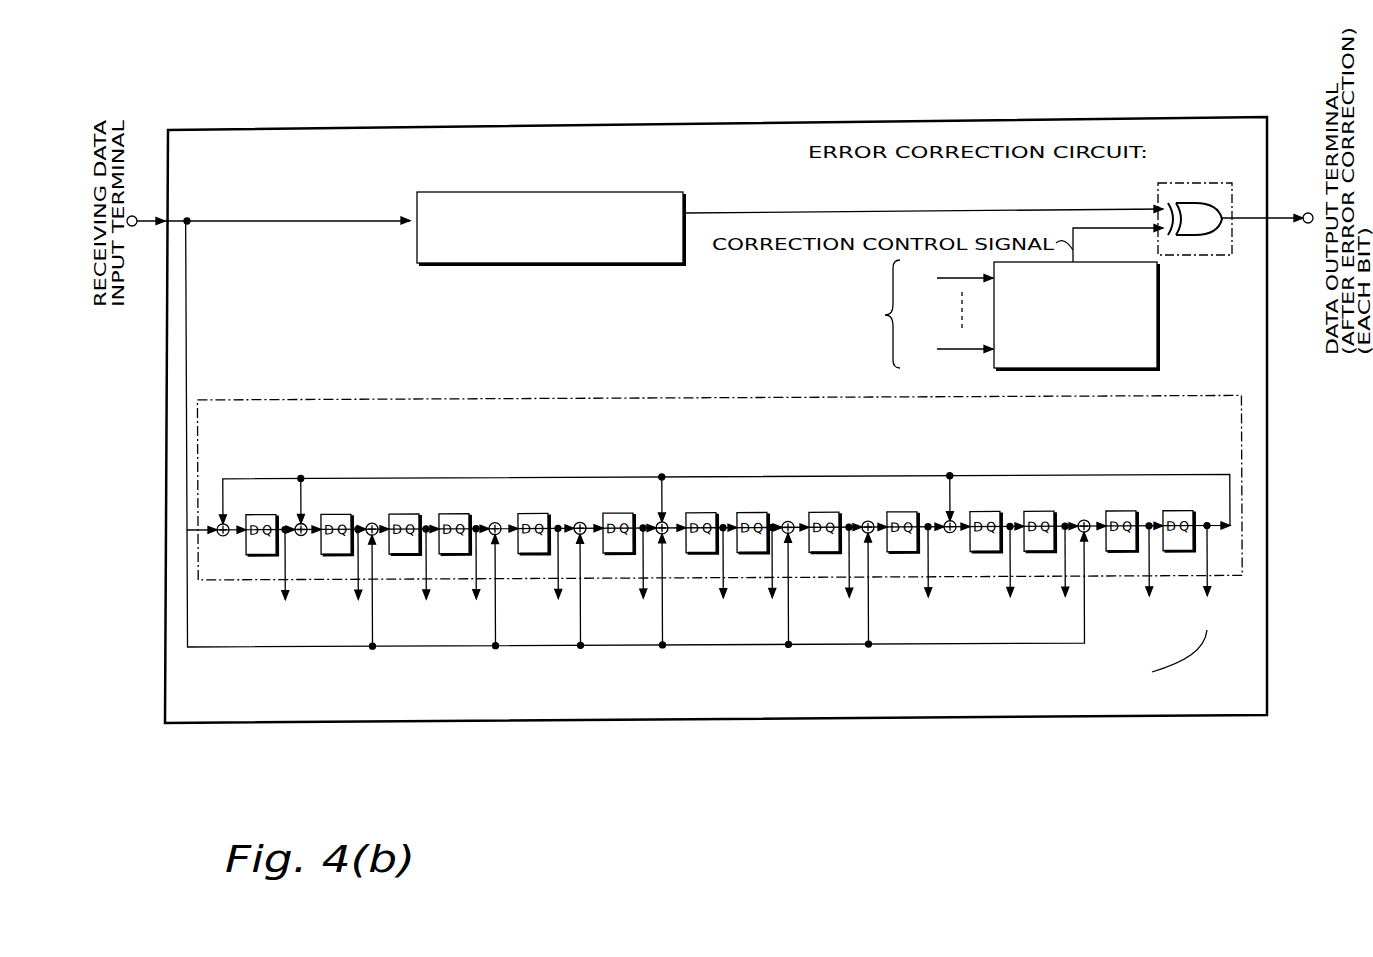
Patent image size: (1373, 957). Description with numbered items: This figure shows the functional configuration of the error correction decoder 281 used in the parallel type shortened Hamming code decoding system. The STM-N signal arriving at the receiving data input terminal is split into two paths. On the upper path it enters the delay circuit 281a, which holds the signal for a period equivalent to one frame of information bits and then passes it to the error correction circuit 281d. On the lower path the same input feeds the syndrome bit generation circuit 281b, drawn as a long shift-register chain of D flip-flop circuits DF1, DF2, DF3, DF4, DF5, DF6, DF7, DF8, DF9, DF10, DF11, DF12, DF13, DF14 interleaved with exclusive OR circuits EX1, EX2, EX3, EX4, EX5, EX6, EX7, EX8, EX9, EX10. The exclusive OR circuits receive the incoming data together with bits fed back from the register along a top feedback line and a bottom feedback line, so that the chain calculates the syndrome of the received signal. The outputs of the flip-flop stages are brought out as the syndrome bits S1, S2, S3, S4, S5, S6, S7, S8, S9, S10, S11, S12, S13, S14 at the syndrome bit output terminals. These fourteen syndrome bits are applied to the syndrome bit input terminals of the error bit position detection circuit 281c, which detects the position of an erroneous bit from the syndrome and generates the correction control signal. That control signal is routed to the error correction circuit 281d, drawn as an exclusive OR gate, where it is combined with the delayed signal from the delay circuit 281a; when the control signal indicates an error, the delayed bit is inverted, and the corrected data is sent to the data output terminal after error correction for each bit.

The error correction decoder 281 is at (802, 99).
The delay circuit 281a is at (607, 190).
The syndrome bit generation circuit 281b is at (720, 461).
The error bit position detection circuit 281c is at (1158, 343).
The error correction circuit 281d is at (1178, 183).
The D flip-flop circuit DF1 is at (257, 515).
The D flip-flop circuit DF2 is at (333, 515).
The D flip-flop circuit DF3 is at (407, 515).
The D flip-flop circuit DF4 is at (455, 515).
The D flip-flop circuit DF5 is at (532, 515).
The D flip-flop circuit DF6 is at (617, 515).
The D flip-flop circuit DF7 is at (700, 515).
The D flip-flop circuit DF8 is at (752, 515).
The D flip-flop circuit DF9 is at (826, 515).
The D flip-flop circuit DF10 is at (903, 515).
The D flip-flop circuit DF11 is at (985, 515).
The D flip-flop circuit DF12 is at (1040, 515).
The D flip-flop circuit DF13 is at (1122, 515).
The D flip-flop circuit DF14 is at (1180, 515).
The exclusive OR circuit EX1 is at (226, 537).
The exclusive OR circuit EX2 is at (303, 537).
The exclusive OR circuit EX3 is at (372, 523).
The exclusive OR circuit EX4 is at (497, 523).
The exclusive OR circuit EX5 is at (580, 523).
The exclusive OR circuit EX6 is at (660, 523).
The exclusive OR circuit EX7 is at (790, 523).
The exclusive OR circuit EX8 is at (868, 523).
The exclusive OR circuit EX9 is at (953, 523).
The exclusive OR circuit EX10 is at (1088, 537).
The syndrome bit S1 is at (279, 579).
The syndrome bit S2 is at (352, 578).
The syndrome bit S3 is at (426, 578).
The syndrome bit S4 is at (472, 578).
The syndrome bit S5 is at (552, 577).
The syndrome bit S6 is at (640, 577).
The syndrome bit S7 is at (718, 577).
The syndrome bit S8 is at (767, 576).
The syndrome bit S9 is at (843, 576).
The syndrome bit S10 is at (928, 576).
The syndrome bit S11 is at (1007, 575).
The syndrome bit S12 is at (1065, 575).
The syndrome bit S13 is at (1152, 575).
The syndrome bit S14 is at (1212, 574).